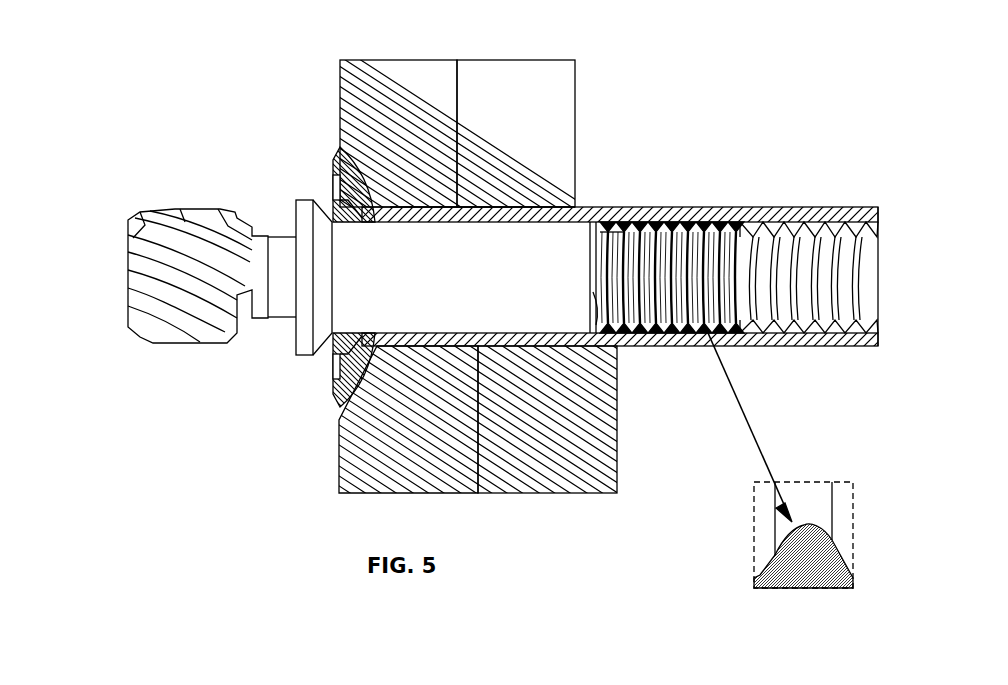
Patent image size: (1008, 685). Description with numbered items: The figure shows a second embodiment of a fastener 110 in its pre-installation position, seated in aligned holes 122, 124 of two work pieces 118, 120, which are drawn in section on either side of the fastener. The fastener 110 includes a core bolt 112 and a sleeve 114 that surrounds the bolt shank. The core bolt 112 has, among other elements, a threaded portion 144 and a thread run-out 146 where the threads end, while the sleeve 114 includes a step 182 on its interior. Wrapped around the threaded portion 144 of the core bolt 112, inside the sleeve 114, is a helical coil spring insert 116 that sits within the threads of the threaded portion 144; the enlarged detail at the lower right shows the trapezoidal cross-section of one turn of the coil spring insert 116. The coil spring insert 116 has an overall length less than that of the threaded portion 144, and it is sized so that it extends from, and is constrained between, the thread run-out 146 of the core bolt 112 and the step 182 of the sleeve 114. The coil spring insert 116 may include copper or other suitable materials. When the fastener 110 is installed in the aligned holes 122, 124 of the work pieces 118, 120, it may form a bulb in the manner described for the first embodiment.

The fastener 110 is at (733, 66).
The core bolt 112 is at (130, 270).
The sleeve 114 is at (599, 272).
The helical coil spring insert 116 is at (675, 333).
The work piece 118 is at (410, 60).
The work piece 120 is at (467, 60).
The hole 122 is at (390, 207).
The hole 124 is at (543, 207).
The threaded portion 144 is at (753, 333).
The thread run-out 146 is at (605, 222).
The step 182 is at (748, 222).